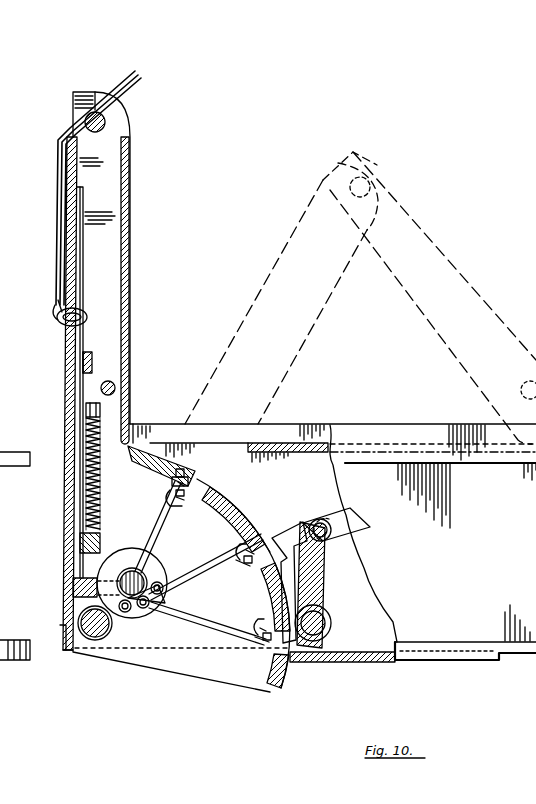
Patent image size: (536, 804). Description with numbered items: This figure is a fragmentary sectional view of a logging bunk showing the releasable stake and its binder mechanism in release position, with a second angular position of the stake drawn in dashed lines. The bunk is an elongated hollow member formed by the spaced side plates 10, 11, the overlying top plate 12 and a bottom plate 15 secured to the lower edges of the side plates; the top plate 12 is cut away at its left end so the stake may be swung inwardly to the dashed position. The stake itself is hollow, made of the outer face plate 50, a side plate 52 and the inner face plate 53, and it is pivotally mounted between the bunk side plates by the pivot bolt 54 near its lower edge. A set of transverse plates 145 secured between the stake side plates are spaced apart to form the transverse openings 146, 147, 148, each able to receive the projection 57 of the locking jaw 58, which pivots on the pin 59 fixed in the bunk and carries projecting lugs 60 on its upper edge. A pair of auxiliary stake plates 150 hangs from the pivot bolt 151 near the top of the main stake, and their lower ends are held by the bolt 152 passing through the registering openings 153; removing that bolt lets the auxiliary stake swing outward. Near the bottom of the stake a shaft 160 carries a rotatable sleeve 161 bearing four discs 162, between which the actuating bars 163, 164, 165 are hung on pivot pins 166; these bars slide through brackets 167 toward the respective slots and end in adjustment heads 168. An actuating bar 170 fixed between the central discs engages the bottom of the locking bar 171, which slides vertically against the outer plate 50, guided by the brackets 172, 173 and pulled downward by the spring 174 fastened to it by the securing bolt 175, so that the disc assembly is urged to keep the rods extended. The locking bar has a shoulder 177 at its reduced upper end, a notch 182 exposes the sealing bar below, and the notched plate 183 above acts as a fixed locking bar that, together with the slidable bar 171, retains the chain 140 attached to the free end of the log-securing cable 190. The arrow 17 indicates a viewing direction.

The side plate 10 is at (470, 493).
The side plate 11 is at (357, 640).
The top plate 12 is at (287, 440).
The bottom plate 15 is at (384, 657).
The direction arrow 17 is at (170, 700).
The outer face plate 50 is at (68, 503).
The side plate 52 is at (108, 191).
The inner face plate 53 is at (130, 230).
The pivot bolt 54 is at (97, 632).
The projection 57 is at (280, 542).
The locking jaw 58 is at (310, 587).
The pin 59 is at (322, 623).
The lug 60 is at (322, 545).
The chain 140 is at (62, 323).
The transverse plate 145 is at (165, 418).
The transverse opening 146 is at (207, 489).
The transverse opening 147 is at (280, 537).
The transverse opening 148 is at (265, 655).
The auxiliary stake plate 150 is at (425, 218).
The pivot bolt 151 is at (108, 115).
The bolt 152 is at (113, 383).
The registering opening 153 is at (524, 383).
The shaft 160 is at (130, 548).
The sleeve 161 is at (135, 568).
The disc 162 is at (115, 552).
The actuating bar 163 is at (188, 533).
The actuating bar 164 is at (209, 580).
The actuating bar 165 is at (188, 628).
The pivot pin 166 is at (130, 614).
The bracket 167 is at (162, 492).
The adjustment head 168 is at (200, 480).
The actuating bar 170 is at (73, 592).
The locking bar 171 is at (78, 566).
The bracket 172 is at (80, 545).
The bracket 173 is at (90, 360).
The spring 174 is at (100, 469).
The securing bolt 175 is at (101, 412).
The shoulder 177 is at (82, 364).
The notch 182 is at (65, 634).
The notched plate 183 is at (84, 262).
The cable 190 is at (98, 180).